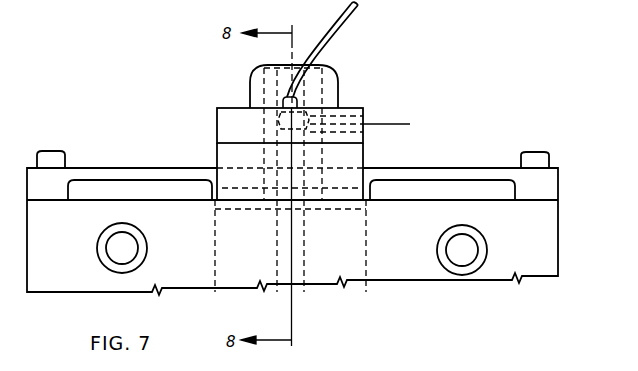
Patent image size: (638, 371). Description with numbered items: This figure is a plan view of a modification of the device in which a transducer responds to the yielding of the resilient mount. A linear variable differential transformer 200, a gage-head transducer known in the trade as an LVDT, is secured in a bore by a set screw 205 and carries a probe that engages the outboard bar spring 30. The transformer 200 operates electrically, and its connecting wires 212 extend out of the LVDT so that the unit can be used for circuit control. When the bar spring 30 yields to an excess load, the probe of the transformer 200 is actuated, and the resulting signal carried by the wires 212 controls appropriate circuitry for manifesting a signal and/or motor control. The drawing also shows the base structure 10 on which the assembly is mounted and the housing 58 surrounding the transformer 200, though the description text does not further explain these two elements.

The base plate / mounting block 10 is at (531, 236).
The outboard bar spring 30 is at (441, 172).
The cap / housing 58 is at (251, 85).
The linear variable differential transformer 200 is at (296, 104).
The set screw 205 is at (306, 120).
The connecting wires 212 is at (362, 14).